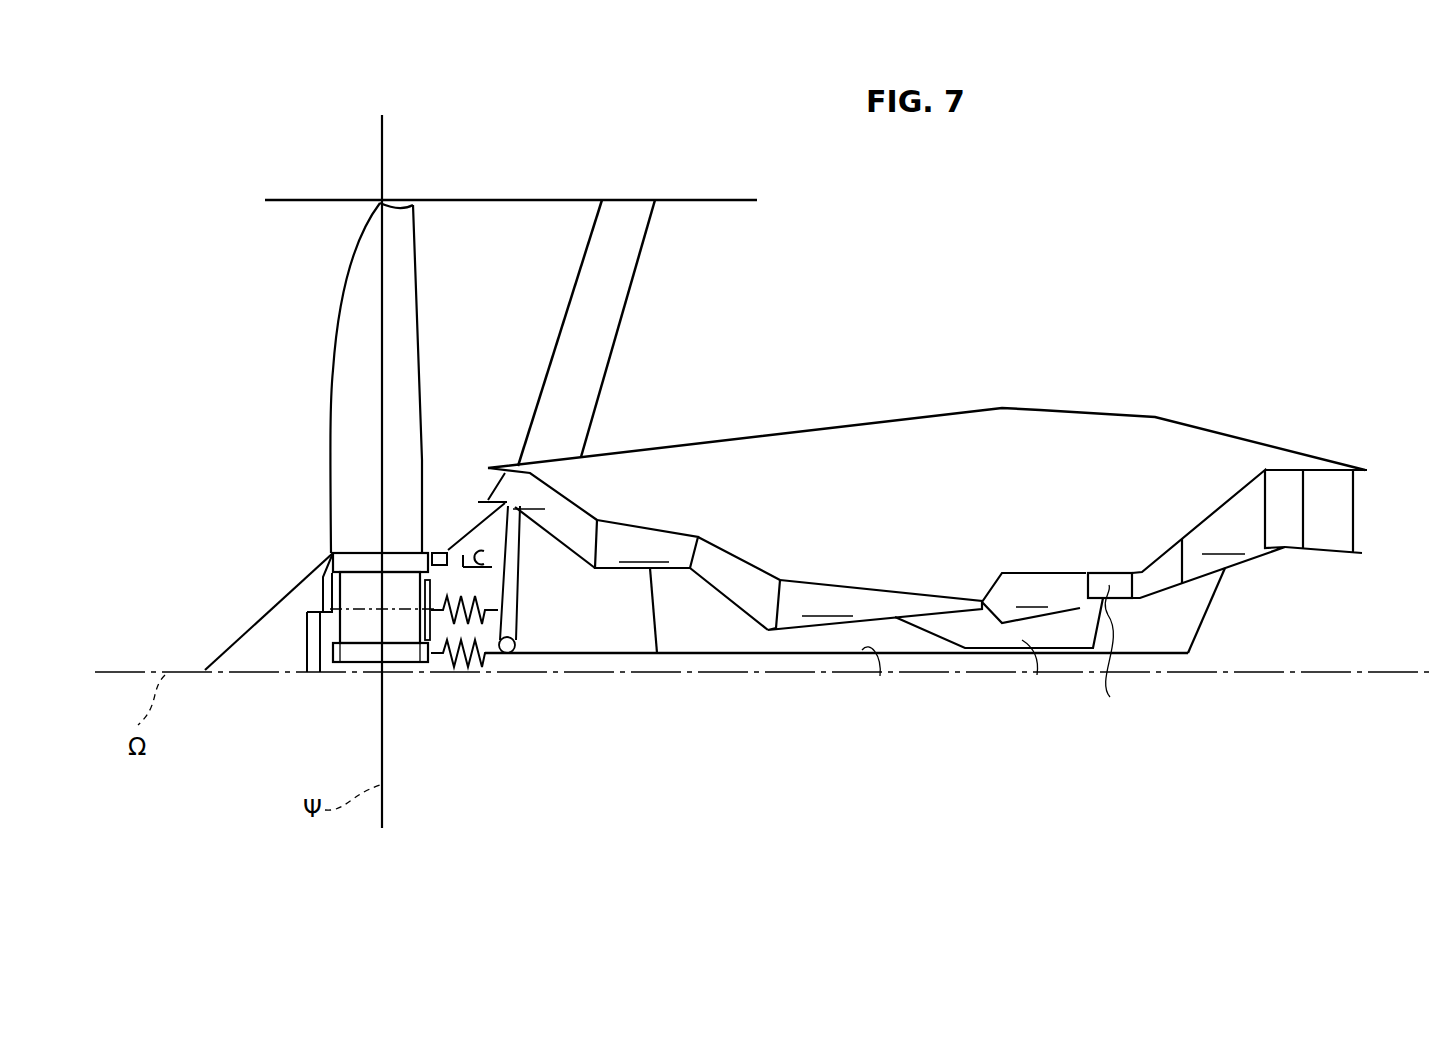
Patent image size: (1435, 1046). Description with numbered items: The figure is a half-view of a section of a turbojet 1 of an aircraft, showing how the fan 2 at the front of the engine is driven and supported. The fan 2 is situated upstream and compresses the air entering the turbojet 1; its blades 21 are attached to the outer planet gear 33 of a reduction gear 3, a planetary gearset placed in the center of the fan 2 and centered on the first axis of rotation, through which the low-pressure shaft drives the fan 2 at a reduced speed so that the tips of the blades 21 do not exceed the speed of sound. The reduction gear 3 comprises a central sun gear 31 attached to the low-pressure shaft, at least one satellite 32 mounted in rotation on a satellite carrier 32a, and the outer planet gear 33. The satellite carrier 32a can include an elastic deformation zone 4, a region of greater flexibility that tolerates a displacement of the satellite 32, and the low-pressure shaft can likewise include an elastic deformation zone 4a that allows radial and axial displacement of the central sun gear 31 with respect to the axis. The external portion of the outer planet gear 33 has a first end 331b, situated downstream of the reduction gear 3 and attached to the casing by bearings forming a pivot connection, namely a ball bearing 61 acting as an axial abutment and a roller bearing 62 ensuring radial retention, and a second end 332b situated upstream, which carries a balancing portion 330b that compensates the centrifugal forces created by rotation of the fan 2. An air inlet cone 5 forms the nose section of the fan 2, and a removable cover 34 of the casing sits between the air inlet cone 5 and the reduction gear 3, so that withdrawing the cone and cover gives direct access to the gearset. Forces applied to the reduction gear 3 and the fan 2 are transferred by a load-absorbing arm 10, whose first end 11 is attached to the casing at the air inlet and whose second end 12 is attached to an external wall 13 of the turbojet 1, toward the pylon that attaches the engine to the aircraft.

The turbojet 1 is at (995, 335).
The fan 2 is at (334, 378).
The reduction gear 3 is at (354, 613).
The elastic deformation zone 4 is at (447, 613).
The elastic deformation zone 4a is at (473, 658).
The air inlet cone 5 is at (227, 643).
The load-absorbing arm 10 is at (609, 333).
The first end 11 is at (568, 442).
The second end 12 is at (636, 210).
The external wall 13 is at (503, 200).
The blades 21 is at (353, 392).
The central sun gear 31 is at (347, 652).
The satellite 32 is at (398, 622).
The satellite carrier 32a is at (432, 590).
The outer planet gear 33 is at (365, 563).
The removable cover 34 is at (313, 648).
The ball bearing 61 is at (497, 545).
The roller bearing 62 is at (448, 550).
The balancing portion 330b is at (313, 598).
The first end 331b is at (467, 570).
The second end 332b is at (305, 585).